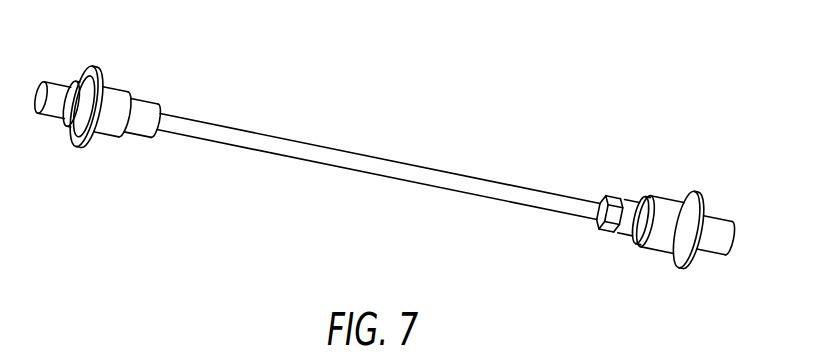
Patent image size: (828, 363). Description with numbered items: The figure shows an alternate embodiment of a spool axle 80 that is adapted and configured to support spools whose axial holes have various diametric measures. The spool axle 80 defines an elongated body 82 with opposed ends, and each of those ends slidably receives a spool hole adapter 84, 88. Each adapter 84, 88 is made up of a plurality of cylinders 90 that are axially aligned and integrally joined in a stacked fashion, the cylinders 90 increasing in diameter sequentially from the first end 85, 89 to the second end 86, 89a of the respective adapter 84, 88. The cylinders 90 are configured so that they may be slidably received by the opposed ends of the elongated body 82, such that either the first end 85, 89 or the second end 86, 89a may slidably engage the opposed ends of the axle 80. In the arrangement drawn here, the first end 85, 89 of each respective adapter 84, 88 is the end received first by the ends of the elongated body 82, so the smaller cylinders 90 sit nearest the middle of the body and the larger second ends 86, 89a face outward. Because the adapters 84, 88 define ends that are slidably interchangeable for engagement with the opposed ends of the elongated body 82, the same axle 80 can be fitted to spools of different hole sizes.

The spool axle 80 is at (260, 160).
The elongated body 82 is at (390, 178).
The spool hole adapter 84 is at (110, 137).
The first end 85 is at (160, 106).
The second end 86 is at (73, 143).
The spool hole adapter 88 is at (640, 236).
The first end 89 is at (613, 199).
The second end 89a is at (685, 270).
The cylinders 90 is at (135, 98).